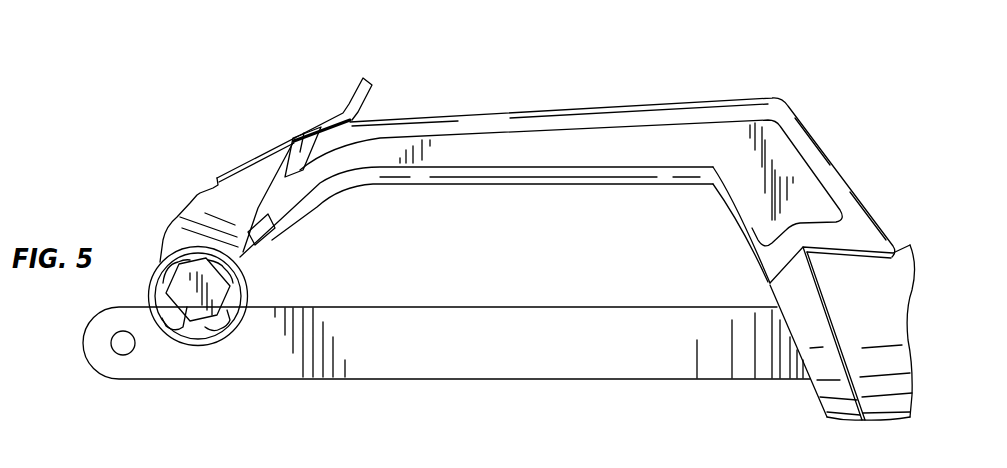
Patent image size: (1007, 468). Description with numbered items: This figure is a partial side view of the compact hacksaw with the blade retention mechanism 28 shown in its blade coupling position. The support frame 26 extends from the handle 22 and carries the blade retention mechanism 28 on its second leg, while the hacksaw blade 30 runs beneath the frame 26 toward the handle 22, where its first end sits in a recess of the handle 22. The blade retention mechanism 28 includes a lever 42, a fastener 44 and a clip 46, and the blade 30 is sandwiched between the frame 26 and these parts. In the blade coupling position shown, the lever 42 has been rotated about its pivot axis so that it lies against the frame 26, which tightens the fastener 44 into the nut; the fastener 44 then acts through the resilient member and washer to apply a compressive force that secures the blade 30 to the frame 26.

The handle 22 is at (878, 303).
The support frame 26 is at (521, 96).
The blade retention mechanism 28 is at (156, 194).
The hacksaw blade 30 is at (619, 389).
The lever 42 is at (251, 188).
The fastener 44 is at (181, 303).
The clip 46 is at (223, 320).